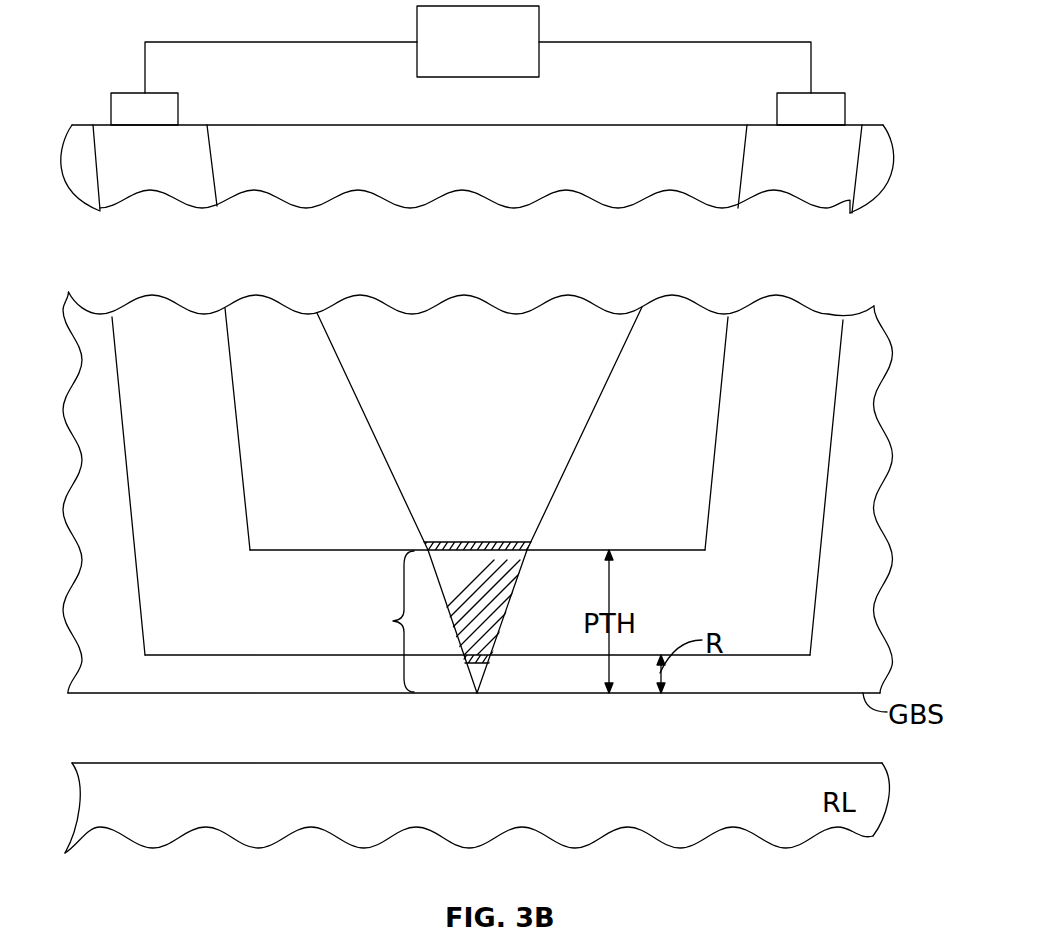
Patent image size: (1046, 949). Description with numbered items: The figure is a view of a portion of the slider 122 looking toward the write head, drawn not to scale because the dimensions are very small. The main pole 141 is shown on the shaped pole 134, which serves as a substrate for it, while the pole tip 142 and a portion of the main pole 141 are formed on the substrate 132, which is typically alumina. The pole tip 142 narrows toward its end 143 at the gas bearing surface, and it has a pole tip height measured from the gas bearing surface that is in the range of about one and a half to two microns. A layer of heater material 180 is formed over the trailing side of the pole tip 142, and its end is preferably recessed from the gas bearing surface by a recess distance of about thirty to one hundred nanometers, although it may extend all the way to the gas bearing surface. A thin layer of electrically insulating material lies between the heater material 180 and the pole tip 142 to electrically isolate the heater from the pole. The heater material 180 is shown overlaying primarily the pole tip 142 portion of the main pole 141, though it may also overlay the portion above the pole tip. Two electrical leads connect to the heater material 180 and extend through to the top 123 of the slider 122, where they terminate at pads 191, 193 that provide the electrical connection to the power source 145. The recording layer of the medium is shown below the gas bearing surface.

The power source 145 is at (417, 25).
The pad 191 is at (111, 103).
The pad 193 is at (847, 108).
The top of slider 123 is at (675, 140).
The slider 122 is at (885, 378).
The main pole 141 is at (532, 317).
The shaped pole 134 is at (693, 317).
The substrate 132 is at (738, 670).
The heater material 180 is at (500, 607).
The end of main pole tip 143 is at (477, 695).
The main pole tip 142 is at (379, 621).